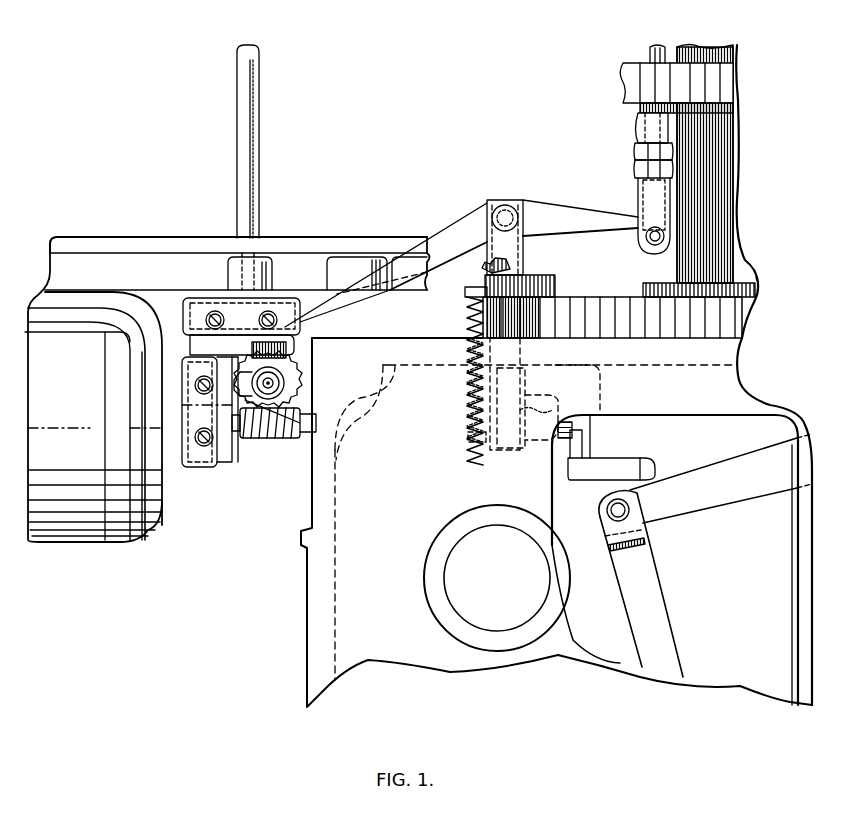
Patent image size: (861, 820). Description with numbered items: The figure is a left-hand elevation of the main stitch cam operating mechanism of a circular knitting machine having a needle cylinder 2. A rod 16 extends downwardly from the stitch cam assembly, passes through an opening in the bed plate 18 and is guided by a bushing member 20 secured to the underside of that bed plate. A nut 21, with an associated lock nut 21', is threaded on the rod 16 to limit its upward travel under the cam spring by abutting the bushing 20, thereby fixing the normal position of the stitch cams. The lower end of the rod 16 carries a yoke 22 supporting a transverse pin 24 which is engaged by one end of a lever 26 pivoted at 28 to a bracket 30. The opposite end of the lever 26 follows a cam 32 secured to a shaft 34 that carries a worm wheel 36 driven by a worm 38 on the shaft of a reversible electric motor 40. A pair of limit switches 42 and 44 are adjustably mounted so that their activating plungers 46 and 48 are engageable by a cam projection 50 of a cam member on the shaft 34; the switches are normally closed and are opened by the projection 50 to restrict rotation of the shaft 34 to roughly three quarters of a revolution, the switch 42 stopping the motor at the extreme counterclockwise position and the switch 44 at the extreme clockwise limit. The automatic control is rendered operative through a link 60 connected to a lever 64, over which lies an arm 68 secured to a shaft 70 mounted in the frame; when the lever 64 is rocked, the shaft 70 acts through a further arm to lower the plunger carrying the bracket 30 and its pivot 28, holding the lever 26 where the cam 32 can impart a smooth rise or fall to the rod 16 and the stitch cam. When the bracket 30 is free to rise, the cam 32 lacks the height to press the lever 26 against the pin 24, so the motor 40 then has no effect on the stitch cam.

The needle cylinder 2 is at (676, 265).
The rod 16 is at (652, 56).
The bed plate 18 is at (626, 78).
The bushing member 20 is at (637, 127).
The nut 21 is at (633, 156).
The lock nut 21' is at (633, 174).
The yoke 22 is at (645, 203).
The transverse pin 24 is at (646, 240).
The lever 26 is at (555, 215).
The pivot 28 is at (508, 212).
The bracket 30 is at (488, 200).
The cam 32 is at (292, 375).
The shaft 34 is at (280, 385).
The worm wheel 36 is at (292, 402).
The worm 38 is at (270, 441).
The reversible electric motor 40 is at (75, 532).
The limit switch 42 is at (228, 302).
The limit switch 44 is at (210, 470).
The activating plunger 46 is at (286, 360).
The activating plunger 48 is at (280, 412).
The cam projection 50 is at (274, 391).
The link 60 is at (658, 608).
The lever 64 is at (712, 498).
The arm 68 is at (622, 462).
The shaft 70 is at (592, 425).